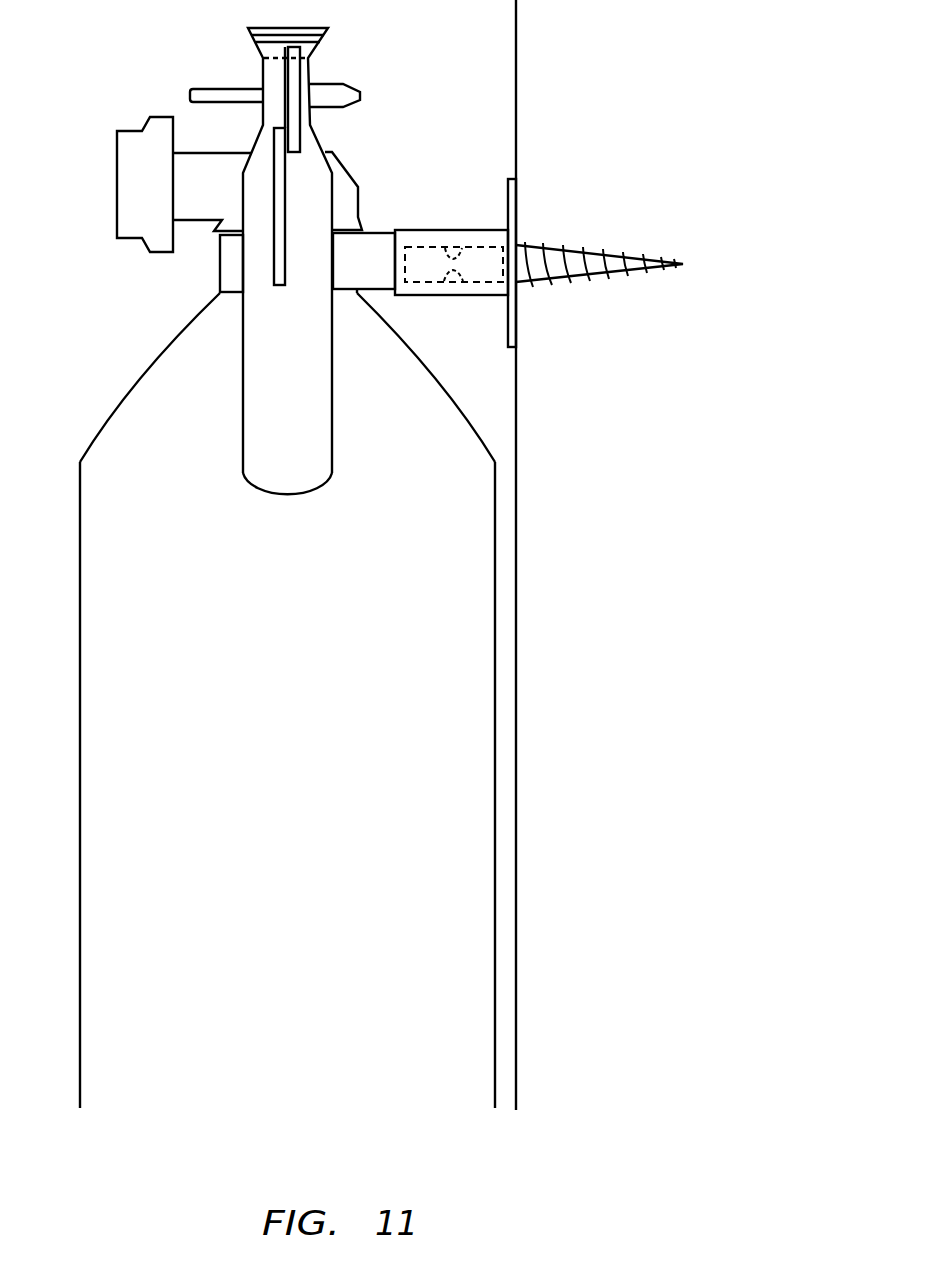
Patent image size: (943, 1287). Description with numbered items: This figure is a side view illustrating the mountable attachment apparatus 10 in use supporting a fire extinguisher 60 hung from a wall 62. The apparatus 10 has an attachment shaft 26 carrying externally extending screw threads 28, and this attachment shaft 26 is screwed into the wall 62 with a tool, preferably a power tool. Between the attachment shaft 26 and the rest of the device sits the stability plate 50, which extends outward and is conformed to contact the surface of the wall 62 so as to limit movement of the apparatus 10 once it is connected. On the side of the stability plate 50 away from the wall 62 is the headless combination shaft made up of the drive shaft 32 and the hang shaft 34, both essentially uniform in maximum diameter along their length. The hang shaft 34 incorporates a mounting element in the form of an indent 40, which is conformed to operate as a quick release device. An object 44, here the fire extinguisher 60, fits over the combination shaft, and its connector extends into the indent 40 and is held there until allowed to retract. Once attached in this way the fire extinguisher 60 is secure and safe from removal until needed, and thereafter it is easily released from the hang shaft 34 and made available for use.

The mountable attachment apparatus 10 is at (517, 253).
The attachment shaft 26 is at (597, 277).
The screw threads 28 is at (603, 253).
The drive shaft 32 is at (420, 260).
The hang shaft 34 is at (477, 283).
The indent 40 is at (453, 247).
The object 44 is at (422, 297).
The stability plate 50 is at (518, 190).
The fire extinguisher 60 is at (293, 817).
The wall 62 is at (663, 777).